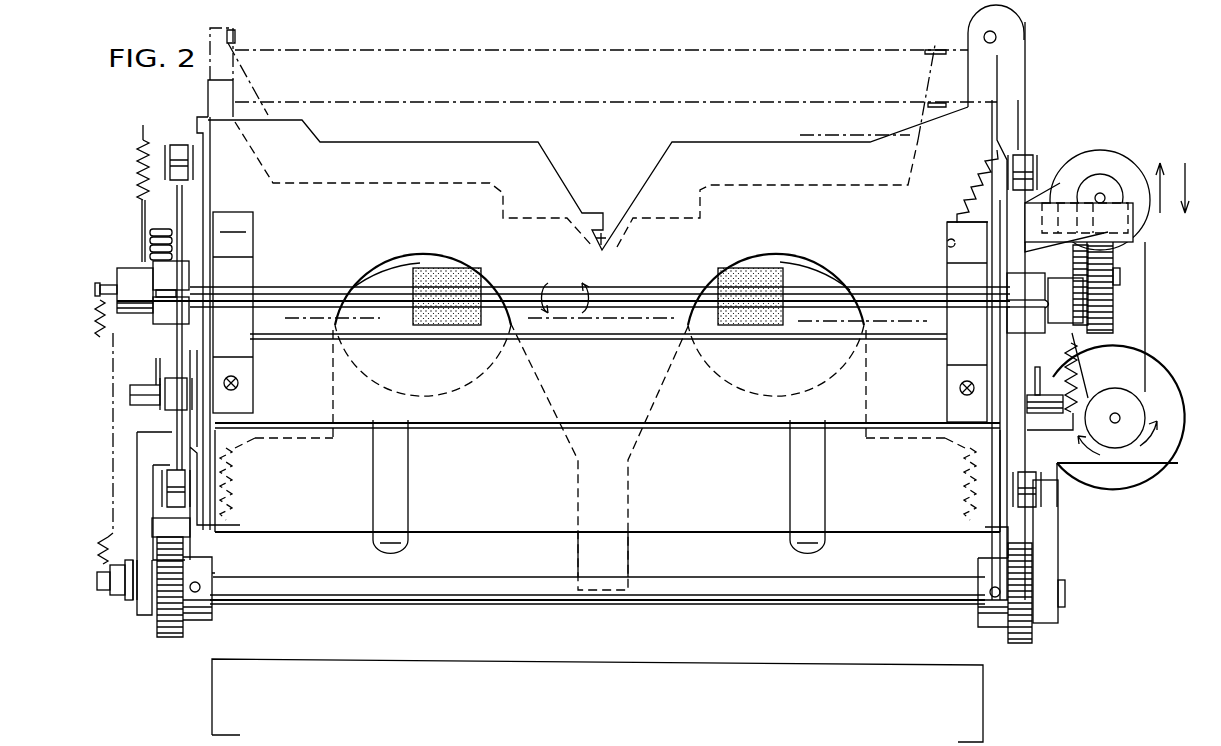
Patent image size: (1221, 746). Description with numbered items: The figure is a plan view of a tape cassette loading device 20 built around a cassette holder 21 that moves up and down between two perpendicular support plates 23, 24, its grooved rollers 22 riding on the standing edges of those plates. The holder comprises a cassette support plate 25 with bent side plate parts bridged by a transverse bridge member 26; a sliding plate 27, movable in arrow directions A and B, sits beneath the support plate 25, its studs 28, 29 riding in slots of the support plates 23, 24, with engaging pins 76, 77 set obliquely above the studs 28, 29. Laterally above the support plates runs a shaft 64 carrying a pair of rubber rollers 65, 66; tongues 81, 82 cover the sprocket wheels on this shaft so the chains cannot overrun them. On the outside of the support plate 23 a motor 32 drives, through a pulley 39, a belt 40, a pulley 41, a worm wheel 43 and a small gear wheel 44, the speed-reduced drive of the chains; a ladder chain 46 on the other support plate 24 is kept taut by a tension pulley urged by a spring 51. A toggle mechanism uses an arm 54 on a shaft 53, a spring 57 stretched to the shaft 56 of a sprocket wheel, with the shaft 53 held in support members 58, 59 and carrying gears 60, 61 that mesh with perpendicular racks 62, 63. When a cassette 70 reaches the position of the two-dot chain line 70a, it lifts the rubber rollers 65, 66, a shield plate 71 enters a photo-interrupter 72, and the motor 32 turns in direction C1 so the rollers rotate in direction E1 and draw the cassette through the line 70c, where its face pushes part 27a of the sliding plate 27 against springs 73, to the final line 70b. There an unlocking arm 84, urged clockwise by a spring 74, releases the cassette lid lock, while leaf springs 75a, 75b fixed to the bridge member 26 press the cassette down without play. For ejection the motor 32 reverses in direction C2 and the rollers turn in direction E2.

The tape cassette loading device 20 is at (484, 51).
The cassette holder 21 is at (546, 141).
The grooved rollers 22 is at (180, 148).
The support plate 23 is at (1000, 203).
The support plate 24 is at (177, 182).
The cassette support plate 25 is at (497, 142).
The transverse bridge member 26 is at (530, 428).
The sliding plate 27 is at (430, 183).
The part of sliding plate 27a is at (937, 103).
The stud 28 is at (1045, 425).
The stud 29 is at (130, 392).
The motor 32 is at (1137, 482).
The pulley 39 is at (1113, 440).
The belt 40 is at (1145, 300).
The pulley 41 is at (1112, 165).
The worm wheel 43 is at (1107, 305).
The small gear wheel 44 is at (1113, 257).
The ladder chain 46 is at (160, 230).
The spring 51 is at (138, 150).
The shaft 53 is at (412, 605).
The arm 54 is at (128, 598).
The shaft of sprocket wheel 56 is at (108, 281).
The spring 57 is at (97, 545).
The support member 58 is at (1058, 505).
The support member 59 is at (137, 468).
The gear 60 is at (1020, 643).
The gear 61 is at (170, 637).
The rack 62 is at (985, 540).
The rack 63 is at (192, 538).
The shaft 64 is at (665, 288).
The rubber roller 65 is at (740, 268).
The rubber roller 66 is at (460, 268).
The cassette 70 is at (985, 690).
The two-dot chain line 70a is at (306, 318).
The single-dot chain line 70b is at (348, 42).
The single-dot chain line 70c is at (868, 101).
The shield plate 71 is at (1048, 280).
The photo-interrupter 72 is at (1085, 203).
The springs 73 is at (235, 478).
The spring 74 is at (975, 176).
The leaf spring 75a is at (947, 355).
The leaf spring 75b is at (253, 247).
The engaging pin 76 is at (1040, 372).
The engaging pin 77 is at (158, 362).
The tongue 81 is at (1008, 283).
The tongue 82 is at (175, 278).
The unlocking arm 84 is at (1025, 90).
The arrow direction A is at (1160, 204).
The arrow direction B is at (1185, 173).
The arrow direction C1 is at (1159, 418).
The arrow direction C2 is at (1081, 446).
The arrow direction E1 is at (542, 283).
The arrow direction E2 is at (586, 283).